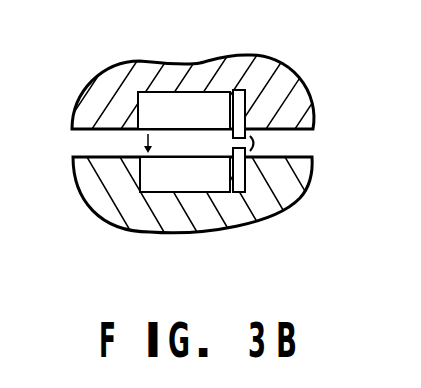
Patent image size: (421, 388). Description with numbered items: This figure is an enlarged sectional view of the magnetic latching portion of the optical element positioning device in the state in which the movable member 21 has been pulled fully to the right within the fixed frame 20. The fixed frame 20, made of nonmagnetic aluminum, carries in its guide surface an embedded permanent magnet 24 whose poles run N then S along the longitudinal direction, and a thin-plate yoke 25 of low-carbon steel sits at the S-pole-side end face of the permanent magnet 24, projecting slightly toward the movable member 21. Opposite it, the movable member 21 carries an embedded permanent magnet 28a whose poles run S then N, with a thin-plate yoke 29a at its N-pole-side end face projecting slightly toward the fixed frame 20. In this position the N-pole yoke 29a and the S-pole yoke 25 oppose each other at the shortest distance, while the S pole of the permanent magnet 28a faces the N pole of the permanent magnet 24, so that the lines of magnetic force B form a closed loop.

The fixed frame 20 is at (116, 77).
The movable member 21 is at (88, 188).
The permanent magnet 24 is at (185, 99).
The thin-plate yoke 25 is at (240, 97).
The permanent magnet 28a is at (177, 183).
The thin-plate yoke 29a is at (236, 193).
The lines of magnetic force B is at (256, 144).